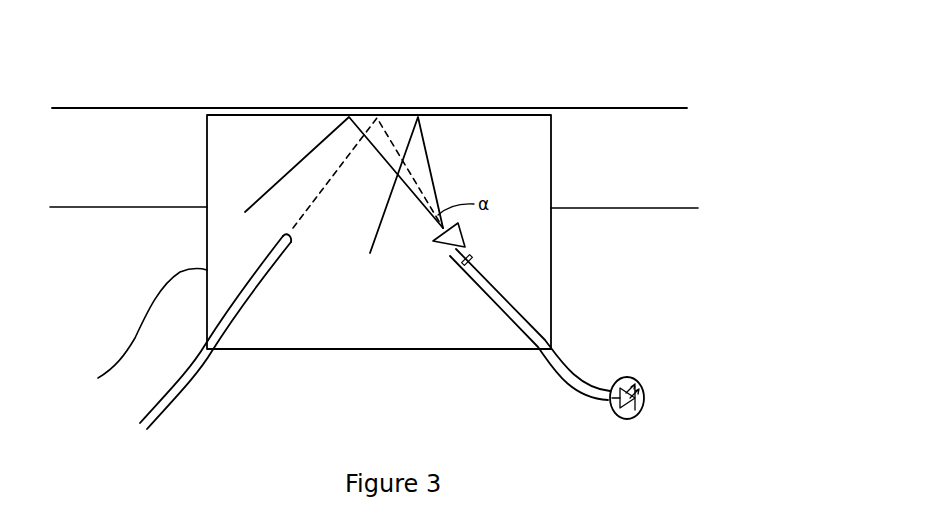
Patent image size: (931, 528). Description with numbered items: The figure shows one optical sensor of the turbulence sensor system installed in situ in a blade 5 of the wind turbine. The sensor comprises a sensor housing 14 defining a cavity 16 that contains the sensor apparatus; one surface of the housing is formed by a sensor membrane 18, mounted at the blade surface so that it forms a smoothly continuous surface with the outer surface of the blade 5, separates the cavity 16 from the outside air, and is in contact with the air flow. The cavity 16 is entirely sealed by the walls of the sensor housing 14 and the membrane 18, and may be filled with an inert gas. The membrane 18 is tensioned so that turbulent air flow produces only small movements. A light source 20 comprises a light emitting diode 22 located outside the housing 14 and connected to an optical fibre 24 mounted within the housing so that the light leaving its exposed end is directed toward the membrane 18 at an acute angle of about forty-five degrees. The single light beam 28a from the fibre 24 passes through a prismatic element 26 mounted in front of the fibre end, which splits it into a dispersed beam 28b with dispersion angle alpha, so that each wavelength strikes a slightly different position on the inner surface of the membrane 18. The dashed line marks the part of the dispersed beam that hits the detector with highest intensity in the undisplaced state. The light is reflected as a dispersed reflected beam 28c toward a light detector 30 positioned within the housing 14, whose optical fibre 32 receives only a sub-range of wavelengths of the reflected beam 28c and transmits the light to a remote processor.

The blade 5 is at (647, 143).
The sensor housing 14 is at (132, 333).
The cavity 16 is at (378, 313).
The sensor membrane 18 is at (463, 108).
The light source 20 is at (572, 408).
The light emitting diode 22 is at (633, 378).
The optical fibre 24 is at (554, 358).
The prismatic element 26 is at (460, 226).
The light beam 28a is at (450, 245).
The dispersed beam 28b is at (417, 154).
The reflected beam 28c is at (307, 172).
The light detector 30 is at (176, 428).
The optical fibre 32 is at (230, 325).